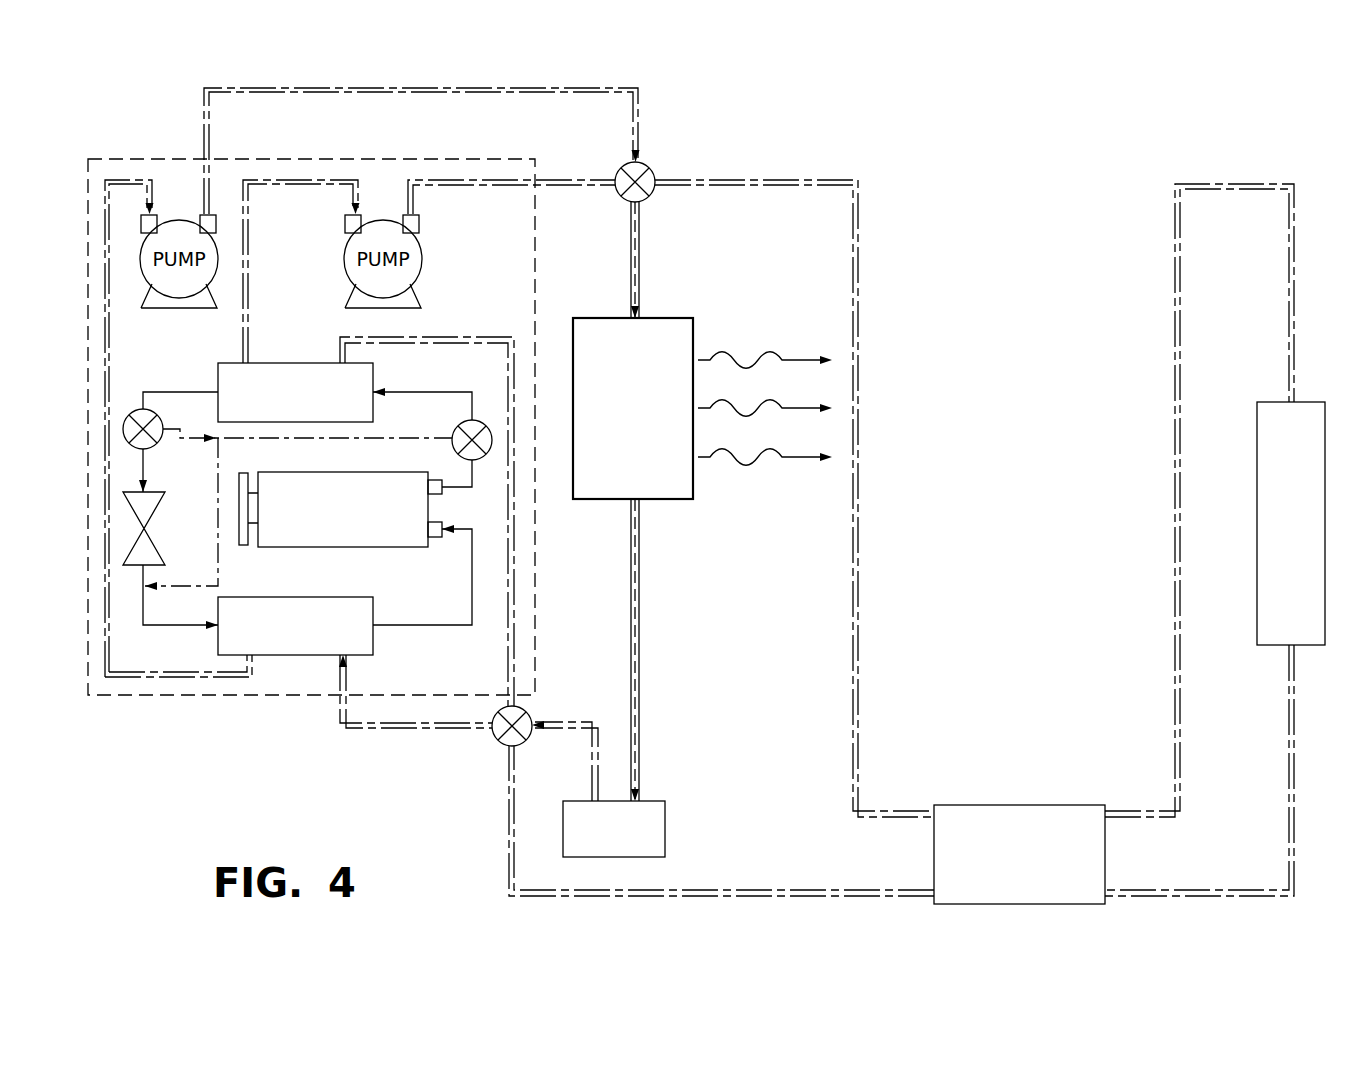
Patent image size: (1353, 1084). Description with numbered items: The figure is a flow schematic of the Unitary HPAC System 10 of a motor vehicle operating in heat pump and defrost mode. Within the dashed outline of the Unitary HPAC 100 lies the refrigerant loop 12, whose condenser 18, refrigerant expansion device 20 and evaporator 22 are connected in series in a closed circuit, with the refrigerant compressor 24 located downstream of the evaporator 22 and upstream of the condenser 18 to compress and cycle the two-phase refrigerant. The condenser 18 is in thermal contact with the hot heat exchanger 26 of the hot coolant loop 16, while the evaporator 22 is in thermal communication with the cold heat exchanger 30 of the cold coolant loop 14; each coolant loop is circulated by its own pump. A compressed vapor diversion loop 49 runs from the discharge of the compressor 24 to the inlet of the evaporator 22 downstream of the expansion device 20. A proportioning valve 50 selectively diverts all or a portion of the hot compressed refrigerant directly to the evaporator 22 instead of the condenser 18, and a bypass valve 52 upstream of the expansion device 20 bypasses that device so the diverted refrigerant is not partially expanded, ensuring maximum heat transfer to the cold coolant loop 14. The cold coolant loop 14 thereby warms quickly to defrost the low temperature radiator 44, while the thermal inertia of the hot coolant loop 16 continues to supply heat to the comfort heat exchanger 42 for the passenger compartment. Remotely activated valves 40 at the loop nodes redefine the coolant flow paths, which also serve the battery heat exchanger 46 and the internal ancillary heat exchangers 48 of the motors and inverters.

The Unitary HPAC System 10 is at (985, 205).
The refrigerant loop 12 is at (417, 625).
The cold coolant loop 14 is at (638, 101).
The hot coolant loop 16 is at (640, 278).
The condenser 18 is at (295, 392).
The refrigerant expansion device 20 is at (160, 533).
The evaporator 22 is at (295, 626).
The refrigerant compressor 24 is at (380, 547).
The hot heat exchanger 26 is at (300, 363).
The cold heat exchanger 30 is at (297, 655).
The remotely activated valve 40 is at (643, 173).
The comfort heat exchanger 42 is at (693, 483).
The low temperature radiator 44 is at (1263, 483).
The battery heat exchanger 46 is at (648, 805).
The internal ancillary heat exchangers 48 is at (1000, 805).
The compressed vapor diversion loop 49 is at (218, 559).
The proportioning valve 50 is at (477, 420).
The bypass valve 52 is at (143, 408).
The Unitary HPAC 100 is at (340, 155).